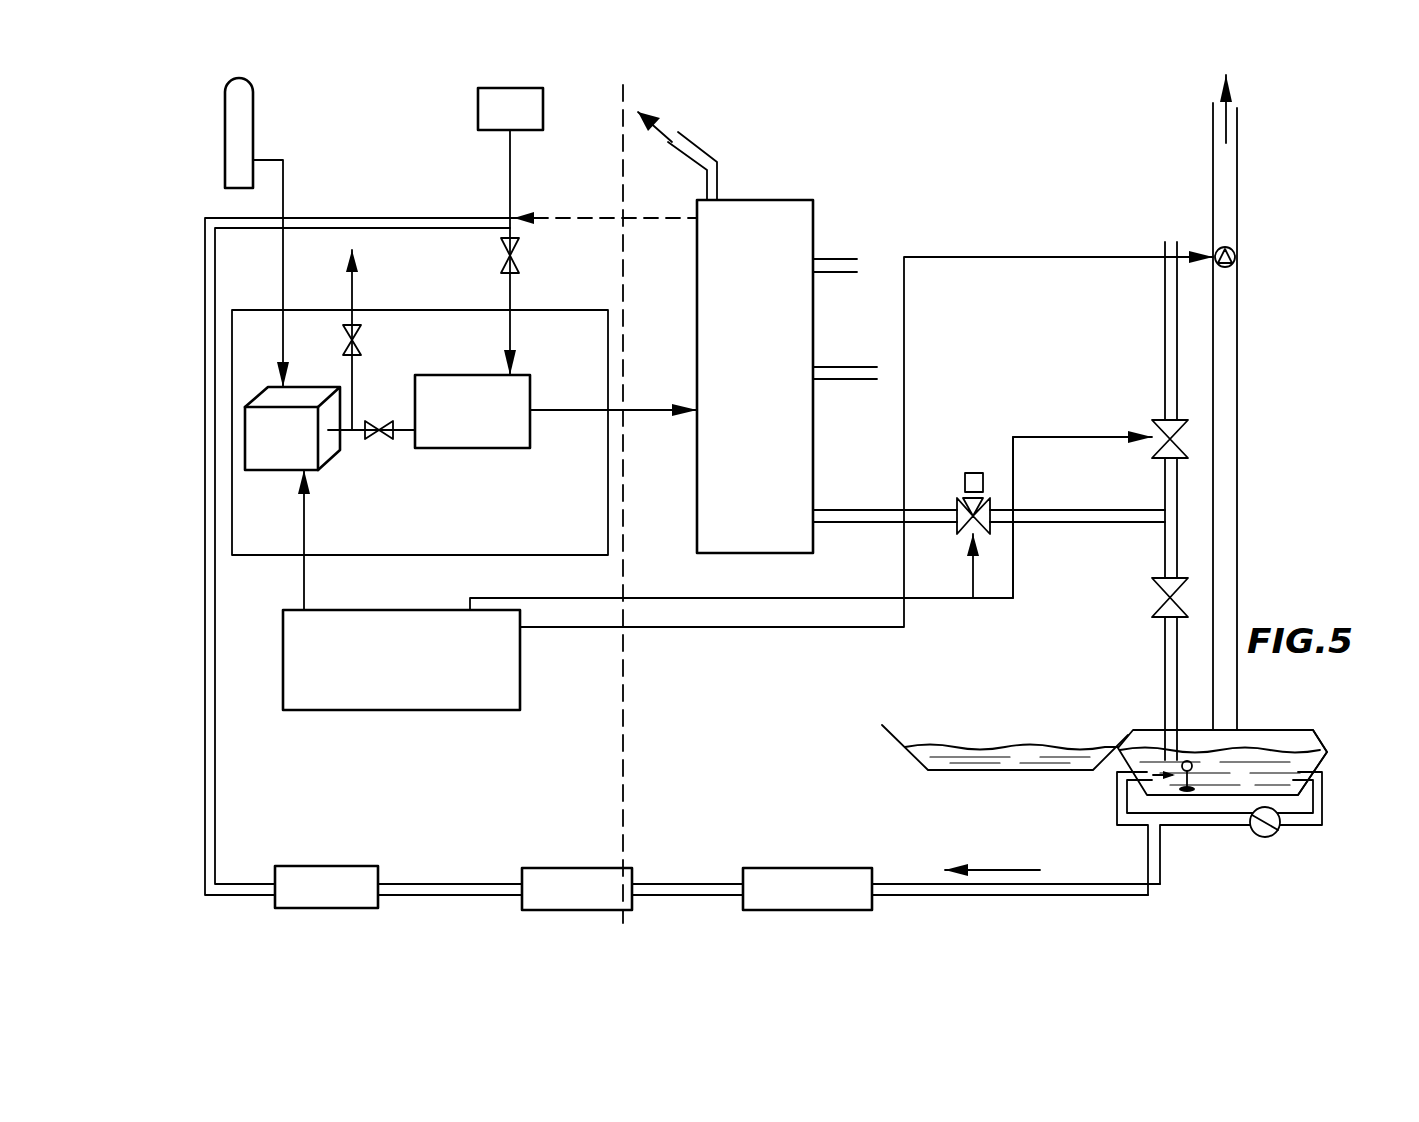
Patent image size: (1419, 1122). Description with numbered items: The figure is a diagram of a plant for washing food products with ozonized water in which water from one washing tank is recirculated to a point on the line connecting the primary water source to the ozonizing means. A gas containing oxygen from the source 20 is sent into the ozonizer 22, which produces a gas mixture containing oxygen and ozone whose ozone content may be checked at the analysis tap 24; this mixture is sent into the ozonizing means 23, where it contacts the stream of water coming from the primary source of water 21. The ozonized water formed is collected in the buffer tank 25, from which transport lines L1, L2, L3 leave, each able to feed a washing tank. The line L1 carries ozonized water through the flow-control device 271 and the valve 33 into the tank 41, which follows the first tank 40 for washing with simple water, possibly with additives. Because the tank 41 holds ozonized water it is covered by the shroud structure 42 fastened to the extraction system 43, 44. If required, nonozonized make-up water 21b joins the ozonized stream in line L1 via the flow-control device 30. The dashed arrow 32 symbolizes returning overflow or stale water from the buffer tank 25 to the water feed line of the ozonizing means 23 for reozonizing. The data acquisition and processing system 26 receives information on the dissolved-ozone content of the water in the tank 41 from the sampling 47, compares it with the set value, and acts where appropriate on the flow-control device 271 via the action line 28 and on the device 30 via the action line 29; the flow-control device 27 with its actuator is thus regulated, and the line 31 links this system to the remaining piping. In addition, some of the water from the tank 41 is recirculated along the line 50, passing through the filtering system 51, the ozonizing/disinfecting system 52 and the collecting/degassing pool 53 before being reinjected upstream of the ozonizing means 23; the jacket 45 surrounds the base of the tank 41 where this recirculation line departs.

The source 20 is at (244, 126).
The primary source of water 21 is at (490, 108).
The nonozonized make-up water 21b is at (1168, 242).
The ozonizer 22 is at (298, 393).
The ozonizing means 23 is at (480, 387).
The analysis tap 24 is at (352, 292).
The buffer tank 25 is at (760, 198).
The data acquisition and processing system 26 is at (488, 678).
The flow-control device 27 is at (973, 548).
The flow-control device 271 is at (975, 473).
The action line 28 is at (793, 596).
The action line 29 is at (1058, 437).
The flow-control device 30 is at (1157, 418).
The return line 31 is at (988, 254).
The dashed arrow 32 is at (536, 218).
The valve 33 is at (1153, 603).
The first tank 40 is at (1058, 772).
The tank 41 is at (1323, 762).
The shroud structure 42 is at (1243, 732).
The extraction system 43 is at (1237, 488).
The extraction system 44 is at (1222, 242).
The jacket 45 is at (1322, 798).
The sampling 47 is at (1195, 770).
The line 50 is at (1052, 887).
The filtering system 51 is at (830, 880).
The ozonizing/disinfecting system 52 is at (578, 880).
The collecting/degassing system 53 is at (342, 873).
The transport line L1 is at (989, 493).
The transport line L2 is at (845, 351).
The transport line L3 is at (835, 244).